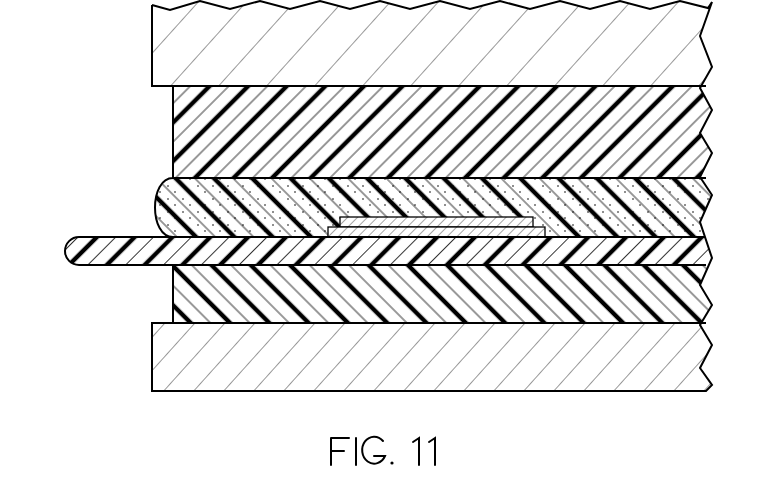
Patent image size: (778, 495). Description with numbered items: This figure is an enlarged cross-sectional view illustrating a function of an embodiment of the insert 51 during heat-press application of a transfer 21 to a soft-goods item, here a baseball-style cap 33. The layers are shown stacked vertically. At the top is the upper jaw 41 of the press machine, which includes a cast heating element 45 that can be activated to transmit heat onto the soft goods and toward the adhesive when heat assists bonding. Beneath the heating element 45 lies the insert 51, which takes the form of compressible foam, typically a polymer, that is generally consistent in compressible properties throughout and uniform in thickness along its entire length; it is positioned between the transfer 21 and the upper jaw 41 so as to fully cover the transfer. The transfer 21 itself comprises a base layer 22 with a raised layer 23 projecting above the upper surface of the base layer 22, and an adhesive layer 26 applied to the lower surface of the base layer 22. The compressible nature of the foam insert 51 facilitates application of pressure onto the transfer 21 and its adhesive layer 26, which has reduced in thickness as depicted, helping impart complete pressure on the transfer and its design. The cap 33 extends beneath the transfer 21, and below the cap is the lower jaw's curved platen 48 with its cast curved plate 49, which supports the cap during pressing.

The upper jaw 41 is at (164, 40).
The heating element 45 is at (185, 123).
The insert 51 is at (168, 200).
The raised layer 23 is at (447, 222).
The transfer 21 is at (536, 224).
The base layer 22 is at (493, 237).
The baseball-style cap 33 is at (69, 248).
The adhesive layer 26 is at (418, 238).
The cast curved plate 49 is at (183, 295).
The curved platen 48 is at (160, 348).